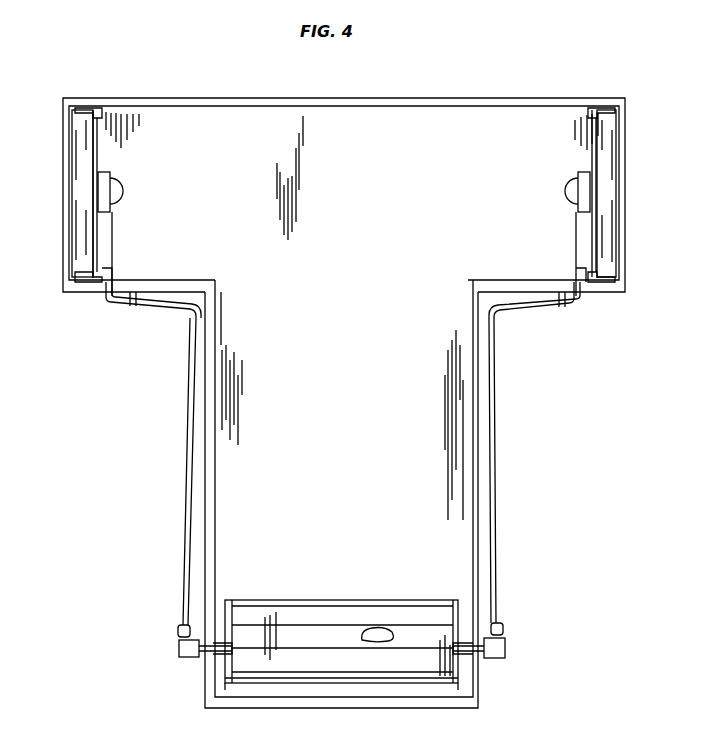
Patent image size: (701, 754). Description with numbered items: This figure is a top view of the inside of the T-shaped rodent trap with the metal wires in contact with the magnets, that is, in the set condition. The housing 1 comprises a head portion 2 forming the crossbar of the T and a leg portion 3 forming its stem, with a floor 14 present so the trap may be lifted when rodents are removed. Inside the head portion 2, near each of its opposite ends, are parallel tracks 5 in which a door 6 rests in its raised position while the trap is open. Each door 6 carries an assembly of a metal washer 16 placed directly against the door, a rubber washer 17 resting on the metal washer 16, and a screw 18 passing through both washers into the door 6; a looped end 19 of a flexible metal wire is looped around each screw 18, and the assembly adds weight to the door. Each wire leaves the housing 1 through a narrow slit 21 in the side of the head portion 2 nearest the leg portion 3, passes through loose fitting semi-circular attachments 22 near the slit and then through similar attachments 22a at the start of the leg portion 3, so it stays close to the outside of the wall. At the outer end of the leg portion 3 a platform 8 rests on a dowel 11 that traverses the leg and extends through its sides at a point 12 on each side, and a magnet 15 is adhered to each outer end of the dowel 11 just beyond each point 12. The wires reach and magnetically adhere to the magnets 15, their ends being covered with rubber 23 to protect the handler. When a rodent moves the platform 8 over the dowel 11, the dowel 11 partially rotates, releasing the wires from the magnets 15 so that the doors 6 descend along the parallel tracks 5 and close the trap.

The housing 1 is at (513, 421).
The head portion 2 is at (333, 126).
The leg portion 3 is at (481, 489).
The parallel tracks 5 is at (100, 107).
The door 6 is at (85, 181).
The platform 8 is at (336, 620).
The dowel 11 is at (213, 678).
The point 12 is at (220, 648).
The floor 14 is at (352, 356).
The magnet 15 is at (179, 650).
The metal washer 16 is at (100, 162).
The rubber washer 17 is at (104, 178).
The screw 18 is at (114, 208).
The looped end 19 is at (121, 192).
The narrow slit 21 is at (120, 280).
The semi-circular attachments 22 is at (122, 310).
The semi-circular attachments 22a is at (190, 318).
The rubber 23 is at (180, 631).